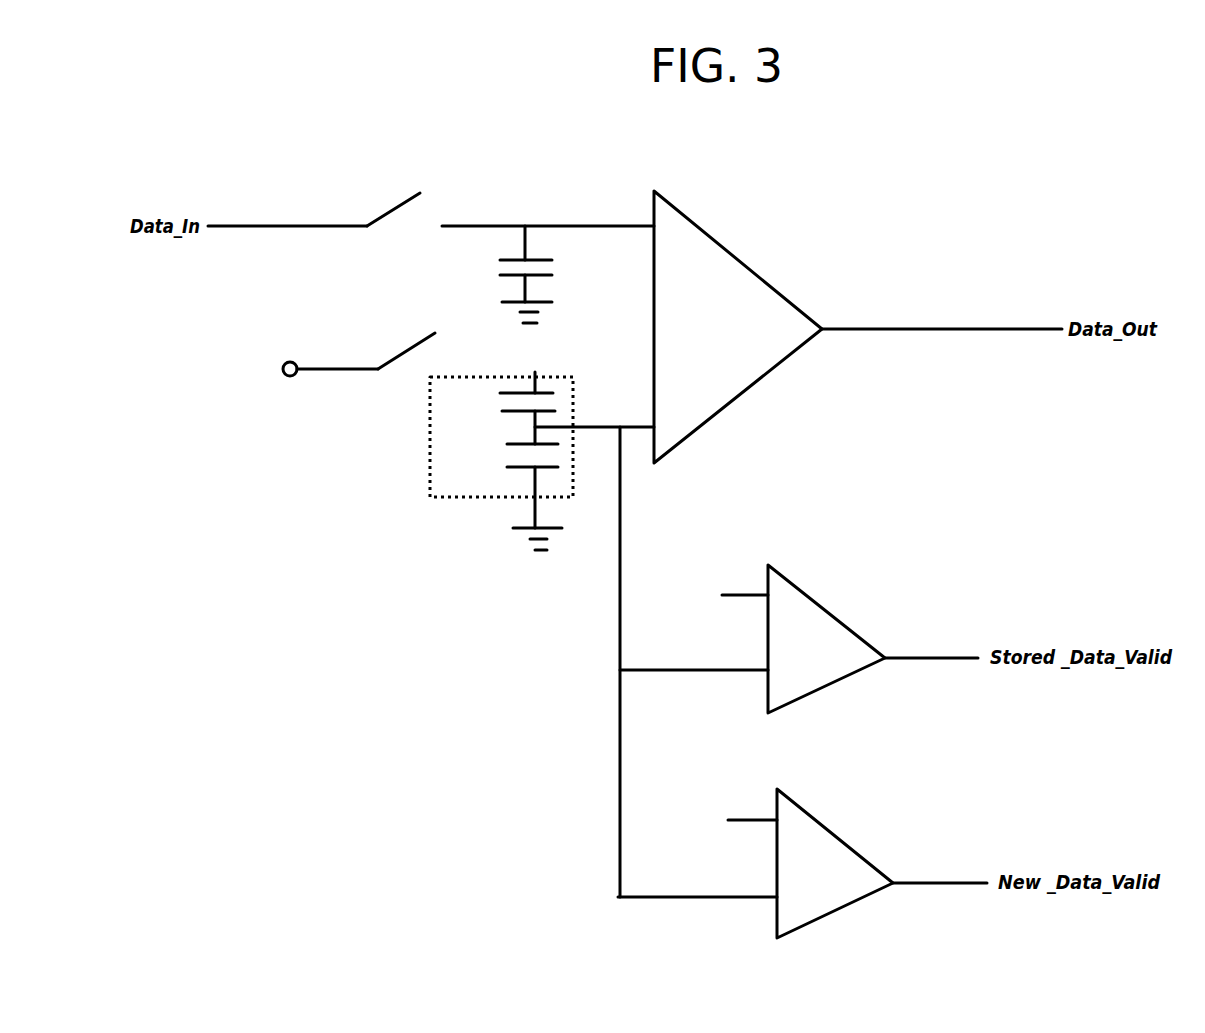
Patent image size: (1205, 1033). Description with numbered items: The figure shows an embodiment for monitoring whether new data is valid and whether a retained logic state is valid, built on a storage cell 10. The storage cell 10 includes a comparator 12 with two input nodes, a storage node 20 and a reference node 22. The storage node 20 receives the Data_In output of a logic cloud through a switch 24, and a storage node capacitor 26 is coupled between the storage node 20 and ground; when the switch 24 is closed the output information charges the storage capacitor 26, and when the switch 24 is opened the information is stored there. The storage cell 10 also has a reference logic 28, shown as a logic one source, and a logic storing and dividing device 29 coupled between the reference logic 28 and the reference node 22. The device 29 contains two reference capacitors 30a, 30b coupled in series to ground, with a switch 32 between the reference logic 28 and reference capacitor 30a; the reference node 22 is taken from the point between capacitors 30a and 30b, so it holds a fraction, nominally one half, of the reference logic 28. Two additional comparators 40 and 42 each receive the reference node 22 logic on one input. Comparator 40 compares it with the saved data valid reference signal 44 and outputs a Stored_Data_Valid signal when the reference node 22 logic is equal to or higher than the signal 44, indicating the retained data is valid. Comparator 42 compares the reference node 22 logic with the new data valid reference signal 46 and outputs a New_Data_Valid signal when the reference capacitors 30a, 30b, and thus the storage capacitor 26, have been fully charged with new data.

The storage cell 10 is at (763, 327).
The comparator 12 is at (713, 329).
The storage node 20 is at (600, 222).
The reference node 22 is at (632, 425).
The switch 24 is at (376, 204).
The storage node capacitor 26 is at (486, 282).
The reference logic 28 is at (285, 362).
The logic storing and dividing device 29 is at (435, 461).
The reference capacitor 30a is at (491, 414).
The reference capacitor 30b is at (492, 469).
The switch 32 is at (380, 346).
The comparator 40 is at (821, 652).
The comparator 42 is at (826, 875).
The saved data valid reference signal 44 is at (680, 634).
The new data valid reference signal 46 is at (700, 854).